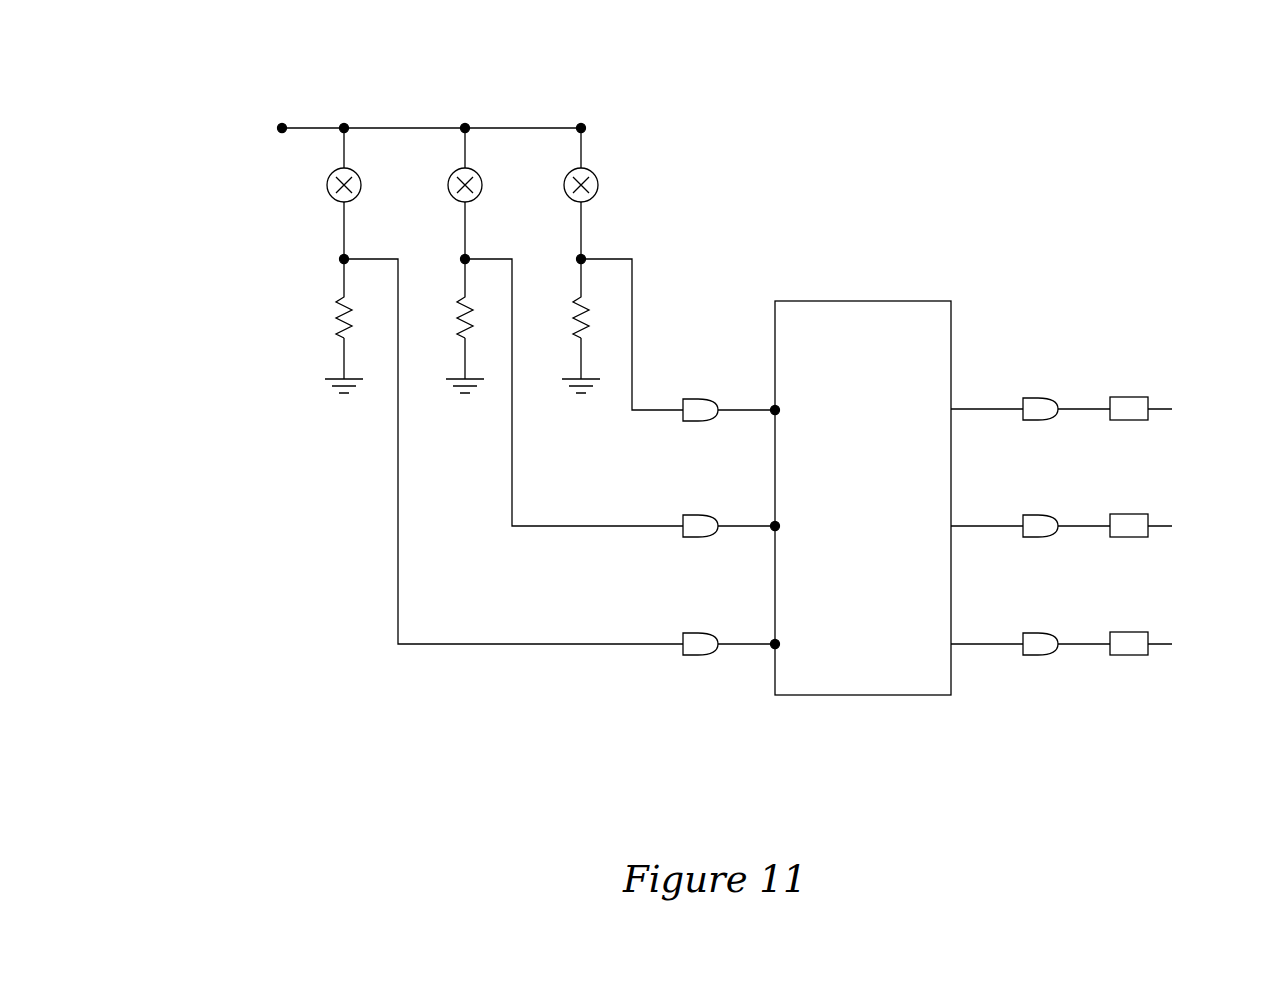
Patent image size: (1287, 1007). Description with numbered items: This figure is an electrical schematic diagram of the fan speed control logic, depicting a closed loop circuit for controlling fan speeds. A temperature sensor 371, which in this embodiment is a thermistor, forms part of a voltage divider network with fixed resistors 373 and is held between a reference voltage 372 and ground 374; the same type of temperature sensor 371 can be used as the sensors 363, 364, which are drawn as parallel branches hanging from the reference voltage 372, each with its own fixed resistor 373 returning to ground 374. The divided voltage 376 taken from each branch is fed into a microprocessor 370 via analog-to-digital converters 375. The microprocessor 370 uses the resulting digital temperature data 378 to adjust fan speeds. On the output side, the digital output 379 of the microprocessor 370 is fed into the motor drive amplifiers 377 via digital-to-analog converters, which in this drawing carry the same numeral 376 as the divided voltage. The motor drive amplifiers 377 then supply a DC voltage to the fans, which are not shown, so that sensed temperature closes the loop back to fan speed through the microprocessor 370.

The reference voltage 372 is at (282, 128).
The sensor 364 is at (356, 174).
The sensor 363 is at (477, 174).
The temperature sensor 371 is at (592, 175).
The fixed resistors 373 is at (340, 309).
The ground 374 is at (330, 378).
The divided voltage 376 is at (583, 256).
The analog-to-digital converters 375 is at (683, 534).
The microprocessor 370 is at (893, 673).
The digital temperature data 378 is at (760, 388).
The digital output 379 is at (968, 408).
The motor drive amplifiers 377 is at (1122, 514).